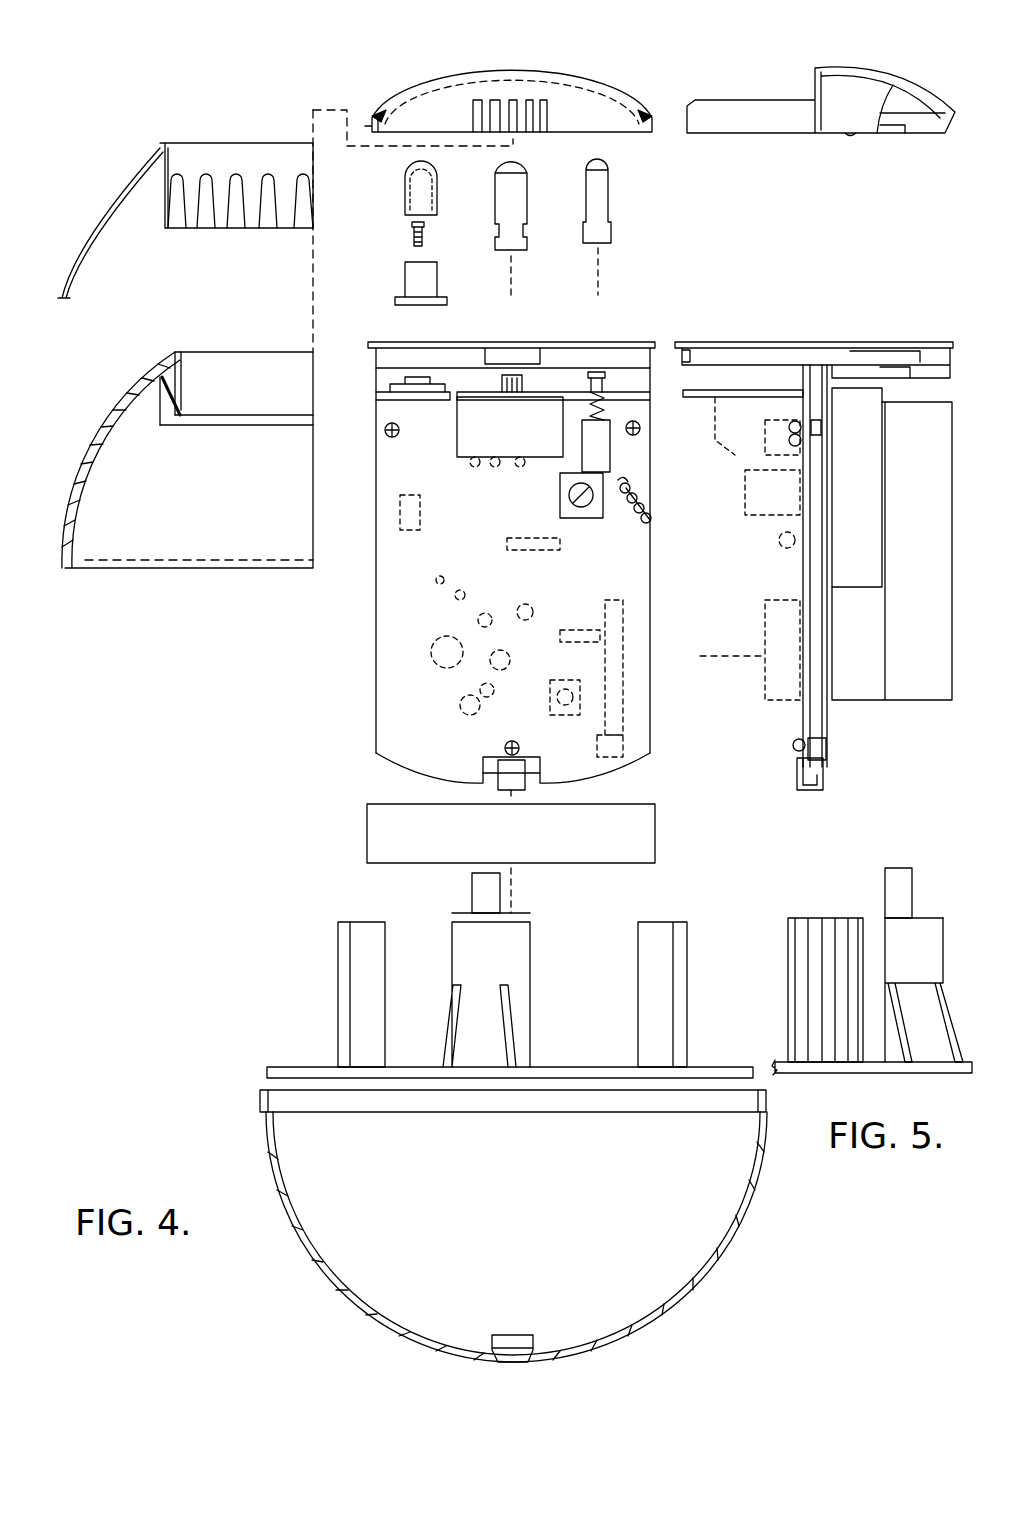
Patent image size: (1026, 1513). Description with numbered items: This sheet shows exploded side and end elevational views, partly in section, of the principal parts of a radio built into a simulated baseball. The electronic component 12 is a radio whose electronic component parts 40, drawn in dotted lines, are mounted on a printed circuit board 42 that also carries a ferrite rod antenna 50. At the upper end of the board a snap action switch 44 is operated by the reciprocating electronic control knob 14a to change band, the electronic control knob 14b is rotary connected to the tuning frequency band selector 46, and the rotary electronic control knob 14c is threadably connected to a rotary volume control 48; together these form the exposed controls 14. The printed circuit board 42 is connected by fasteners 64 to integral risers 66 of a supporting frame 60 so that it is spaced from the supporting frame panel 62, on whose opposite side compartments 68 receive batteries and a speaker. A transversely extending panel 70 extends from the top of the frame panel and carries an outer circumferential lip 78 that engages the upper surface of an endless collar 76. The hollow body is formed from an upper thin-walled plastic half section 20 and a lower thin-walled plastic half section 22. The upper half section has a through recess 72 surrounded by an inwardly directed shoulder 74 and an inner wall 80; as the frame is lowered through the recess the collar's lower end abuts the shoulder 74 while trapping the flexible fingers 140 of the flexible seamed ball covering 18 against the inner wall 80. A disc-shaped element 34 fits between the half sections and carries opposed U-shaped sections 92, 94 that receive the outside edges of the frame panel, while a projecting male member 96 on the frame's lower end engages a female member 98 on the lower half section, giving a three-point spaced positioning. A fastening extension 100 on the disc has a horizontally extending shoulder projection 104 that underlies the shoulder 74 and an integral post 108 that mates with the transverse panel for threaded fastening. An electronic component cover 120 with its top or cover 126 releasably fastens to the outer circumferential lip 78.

In FIG. 4, the electronic component 12 is at (608, 553).
In FIG. 5, the electronic component 12 is at (800, 708).
In FIG. 4, the exposed controls 14 is at (652, 233).
In FIG. 4, the reciprocating electronic control knob 14a is at (596, 194).
In FIG. 4, the electronic control knob 14b is at (508, 194).
In FIG. 4, the rotary electronic control knob 14c is at (400, 243).
In FIG. 4, the flexible seamed ball covering 18 is at (140, 156).
In FIG. 4, the upper thin-walled plastic half section 20 is at (105, 428).
In FIG. 4, the lower thin-walled plastic half section 22 is at (715, 1268).
In FIG. 4, the disc-shaped element 34 is at (300, 1065).
In FIG. 5, the disc-shaped element 34 is at (910, 1073).
In FIG. 4, the electronic component parts 40 is at (625, 660).
In FIG. 4, the printed circuit board 42 is at (628, 715).
In FIG. 5, the printed circuit board 42 is at (782, 638).
In FIG. 4, the snap action switch 44 is at (612, 455).
In FIG. 5, the snap action switch 44 is at (755, 440).
In FIG. 4, the tuning frequency band selector 46 is at (475, 438).
In FIG. 5, the tuning frequency band selector 46 is at (736, 504).
In FIG. 4, the rotary volume control 48 is at (390, 396).
In FIG. 5, the rotary volume control 48 is at (743, 393).
In FIG. 4, the ferrite rod antenna 50 is at (638, 504).
In FIG. 5, the supporting frame 60 is at (830, 729).
In FIG. 5, the supporting frame panel 62 is at (836, 604).
In FIG. 4, the fasteners 64 is at (386, 434).
In FIG. 5, the fasteners 64 is at (802, 447).
In FIG. 5, the integral risers 66 is at (818, 428).
In FIG. 5, the compartments 68 is at (912, 522).
In FIG. 4, the transversely extending panel 70 is at (618, 340).
In FIG. 5, the transversely extending panel 70 is at (880, 340).
In FIG. 4, the through recess 72 is at (195, 424).
In FIG. 4, the shoulder 74 is at (192, 400).
In FIG. 4, the endless collar 76 is at (367, 836).
In FIG. 4, the outer circumferential lip 78 is at (380, 345).
In FIG. 4, the inner wall 80 is at (186, 352).
In FIG. 4, the U-shaped section 92 is at (665, 945).
In FIG. 5, the U-shaped section 92 is at (790, 916).
In FIG. 4, the U-shaped section 94 is at (362, 952).
In FIG. 4, the projecting male member 96 is at (545, 785).
In FIG. 4, the female member 98 is at (535, 1335).
In FIG. 4, the fastening extension 100 is at (492, 958).
In FIG. 5, the fastening extension 100 is at (925, 950).
In FIG. 4, the horizontally extending shoulder projection 104 is at (513, 918).
In FIG. 5, the horizontally extending shoulder projection 104 is at (920, 916).
In FIG. 4, the integral post 108 is at (502, 888).
In FIG. 5, the integral post 108 is at (912, 876).
In FIG. 4, the electronic component cover 120 is at (550, 66).
In FIG. 5, the electronic component cover 120 is at (840, 66).
In FIG. 5, the top or cover 126 is at (898, 100).
In FIG. 4, the flexible fingers 140 is at (264, 228).